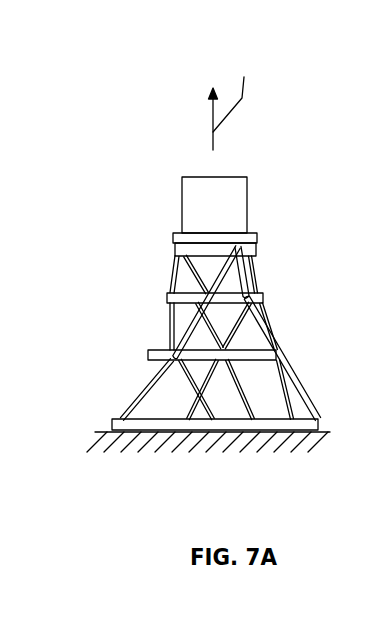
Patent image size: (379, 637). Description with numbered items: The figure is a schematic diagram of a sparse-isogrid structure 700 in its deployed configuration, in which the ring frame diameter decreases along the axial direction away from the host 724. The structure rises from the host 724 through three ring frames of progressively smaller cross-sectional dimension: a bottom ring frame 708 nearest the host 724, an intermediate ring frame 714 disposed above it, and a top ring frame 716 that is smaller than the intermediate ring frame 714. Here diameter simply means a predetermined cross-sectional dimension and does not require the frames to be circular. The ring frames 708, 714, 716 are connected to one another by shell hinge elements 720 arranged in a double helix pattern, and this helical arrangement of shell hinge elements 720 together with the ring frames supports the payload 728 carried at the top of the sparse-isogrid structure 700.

The sparse-isogrid structure 700 is at (158, 163).
The bottom ring frame 708 is at (150, 358).
The intermediate ring frame 714 is at (170, 298).
The top ring frame 716 is at (247, 251).
The shell hinge elements 720 is at (277, 330).
The host 724 is at (208, 457).
The payload 728 is at (243, 189).